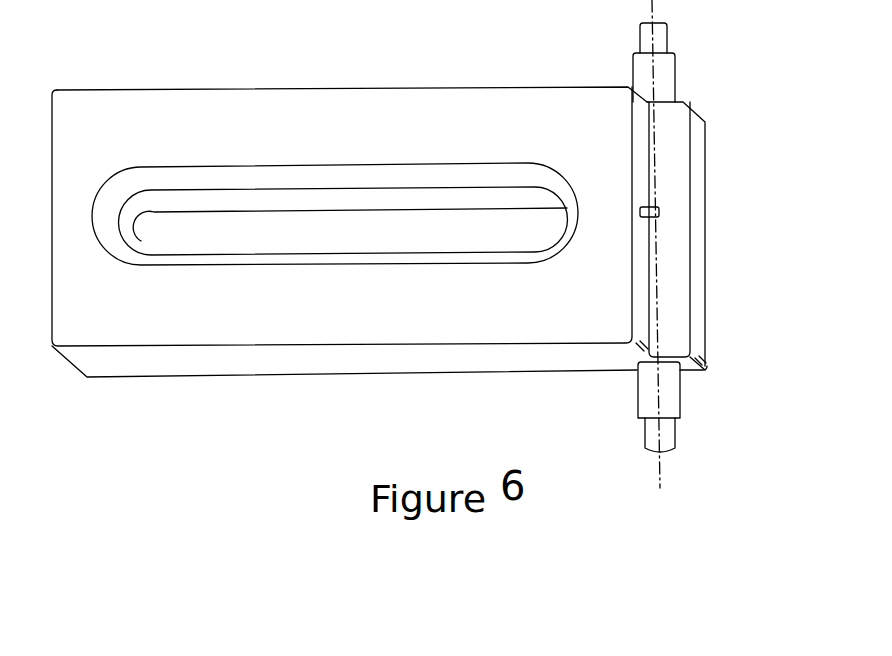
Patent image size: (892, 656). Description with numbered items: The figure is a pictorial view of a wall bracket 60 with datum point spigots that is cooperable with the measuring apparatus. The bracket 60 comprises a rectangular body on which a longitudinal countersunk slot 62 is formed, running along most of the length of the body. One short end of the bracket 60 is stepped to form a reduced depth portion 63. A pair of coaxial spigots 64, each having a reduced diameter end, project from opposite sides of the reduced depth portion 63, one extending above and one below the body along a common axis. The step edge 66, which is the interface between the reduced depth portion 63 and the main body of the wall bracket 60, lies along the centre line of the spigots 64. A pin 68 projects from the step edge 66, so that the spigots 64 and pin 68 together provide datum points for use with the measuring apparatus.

The wall bracket 60 is at (308, 98).
The longitudinal countersunk slot 62 is at (210, 257).
The reduced depth portion 63 is at (682, 250).
The coaxial spigots 64 is at (670, 72).
The step edge 66 is at (643, 297).
The pin 68 is at (650, 205).